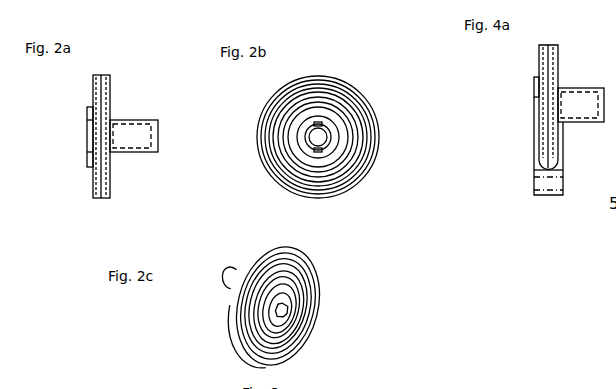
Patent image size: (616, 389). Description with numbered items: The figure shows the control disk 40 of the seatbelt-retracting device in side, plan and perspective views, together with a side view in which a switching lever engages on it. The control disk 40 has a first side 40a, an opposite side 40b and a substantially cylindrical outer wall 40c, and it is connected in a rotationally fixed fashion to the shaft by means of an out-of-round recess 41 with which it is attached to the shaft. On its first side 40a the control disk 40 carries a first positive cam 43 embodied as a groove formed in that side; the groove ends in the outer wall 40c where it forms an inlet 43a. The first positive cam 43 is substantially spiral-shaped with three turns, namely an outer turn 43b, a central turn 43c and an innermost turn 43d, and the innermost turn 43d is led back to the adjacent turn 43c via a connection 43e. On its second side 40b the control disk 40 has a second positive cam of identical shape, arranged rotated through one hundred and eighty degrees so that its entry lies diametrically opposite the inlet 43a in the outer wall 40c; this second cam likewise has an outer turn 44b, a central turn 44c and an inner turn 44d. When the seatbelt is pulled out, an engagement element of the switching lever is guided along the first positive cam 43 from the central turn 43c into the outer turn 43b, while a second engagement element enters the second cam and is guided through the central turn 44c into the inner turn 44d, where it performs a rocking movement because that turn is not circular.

In FIG. 2A, the control disk 40 is at (130, 163).
In FIG. 2B, the control disk 40 is at (354, 124).
In FIG. 2C, the control disk 40 is at (298, 309).
In FIG. 4A, the control disk 40 is at (551, 78).
In FIG. 2A, the first side 40a is at (96, 173).
In FIG. 2C, the first side 40a is at (299, 321).
In FIG. 2A, the second side 40b is at (113, 162).
In FIG. 2C, the outer wall 40c is at (234, 288).
In FIG. 2B, the out-of-round recess 41 is at (324, 143).
In FIG. 2C, the first positive cam 43 is at (314, 275).
In FIG. 2B, the inlet 43a is at (311, 72).
In FIG. 2C, the inlet 43a is at (262, 258).
In FIG. 2B, the outer turn 43b is at (353, 80).
In FIG. 2C, the outer turn 43b is at (313, 258).
In FIG. 2B, the central turn 43c is at (355, 108).
In FIG. 2B, the innermost turn 43d is at (362, 142).
In FIG. 2B, the connection 43e is at (281, 142).
In FIG. 2A, the outer turn of second positive cam 44b is at (111, 80).
In FIG. 2A, the central turn of second positive cam 44c is at (113, 95).
In FIG. 2A, the inner turn of second positive cam 44d is at (115, 107).